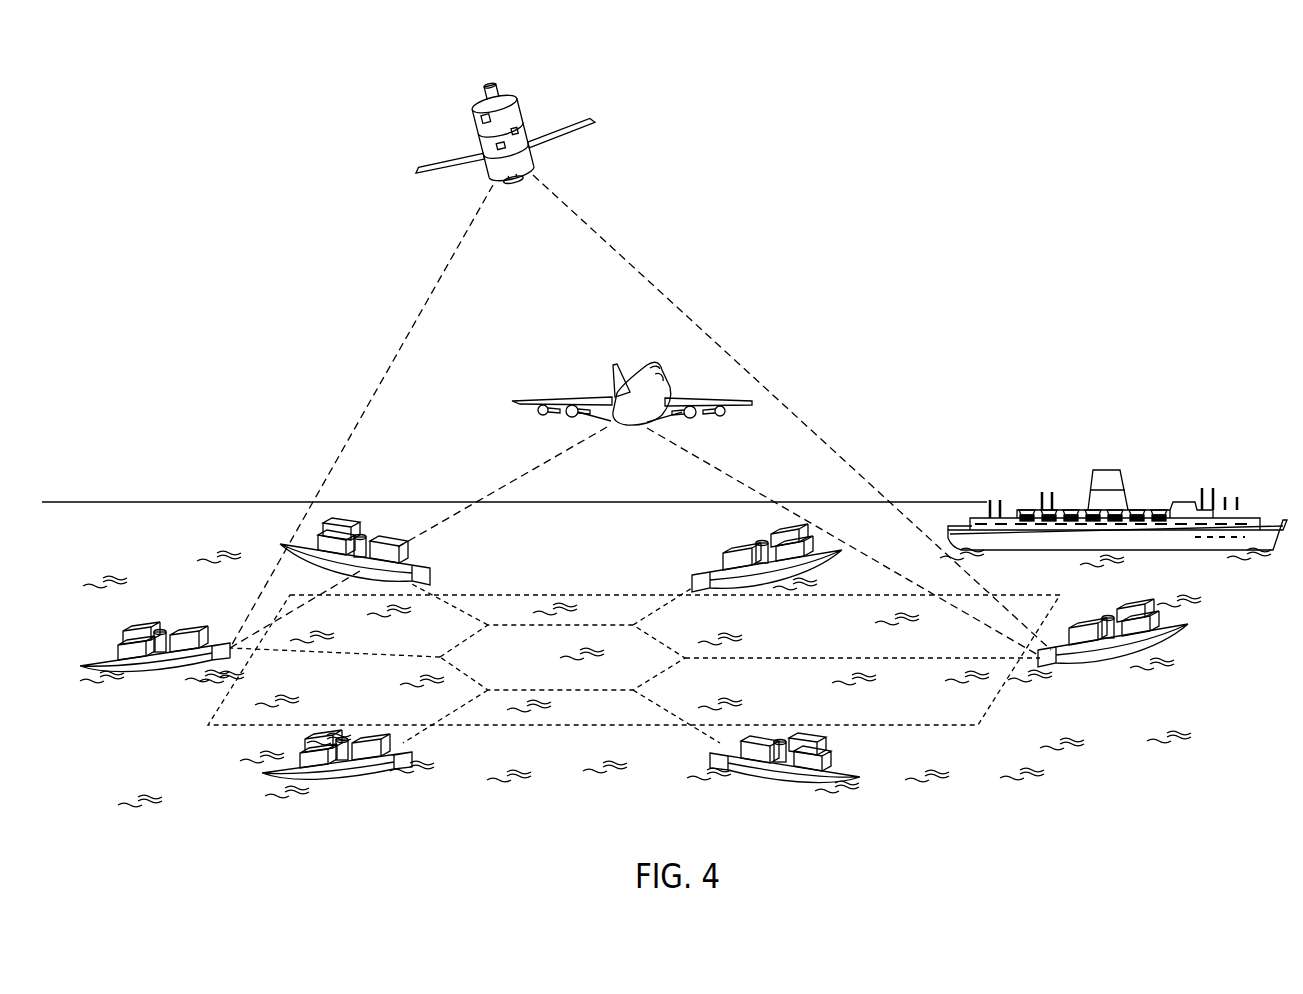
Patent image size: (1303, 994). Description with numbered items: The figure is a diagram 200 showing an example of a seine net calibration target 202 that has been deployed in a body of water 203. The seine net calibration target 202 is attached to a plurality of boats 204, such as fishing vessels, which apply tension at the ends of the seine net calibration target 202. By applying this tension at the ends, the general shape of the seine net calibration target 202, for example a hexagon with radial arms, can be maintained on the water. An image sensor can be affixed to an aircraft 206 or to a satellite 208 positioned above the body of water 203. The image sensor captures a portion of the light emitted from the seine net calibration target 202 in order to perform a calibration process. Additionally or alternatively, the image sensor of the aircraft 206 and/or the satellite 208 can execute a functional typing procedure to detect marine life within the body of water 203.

The diagram 200 is at (883, 324).
The seine net calibration target 202 is at (568, 595).
The body of water 203 is at (147, 502).
The boats 204 is at (90, 656).
The aircraft 206 is at (626, 428).
The satellite 208 is at (513, 184).